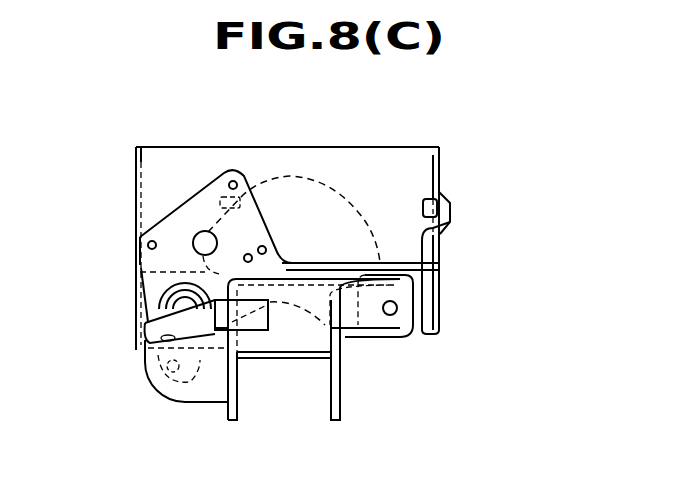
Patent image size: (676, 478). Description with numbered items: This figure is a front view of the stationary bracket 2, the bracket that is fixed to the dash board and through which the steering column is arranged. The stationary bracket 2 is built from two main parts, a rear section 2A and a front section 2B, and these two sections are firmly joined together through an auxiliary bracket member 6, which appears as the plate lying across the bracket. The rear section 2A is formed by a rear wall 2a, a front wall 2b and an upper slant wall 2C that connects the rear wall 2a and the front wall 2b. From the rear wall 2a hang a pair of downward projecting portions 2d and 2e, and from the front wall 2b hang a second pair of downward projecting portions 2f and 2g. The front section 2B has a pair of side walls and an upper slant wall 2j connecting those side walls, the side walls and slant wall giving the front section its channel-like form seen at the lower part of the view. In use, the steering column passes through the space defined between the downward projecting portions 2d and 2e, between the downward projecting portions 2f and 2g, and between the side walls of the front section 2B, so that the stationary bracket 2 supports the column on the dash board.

The stationary bracket 2 is at (272, 145).
The rear section 2A is at (376, 147).
The front section 2B is at (287, 362).
The upper slant wall 2C is at (200, 165).
The rear wall 2a is at (410, 183).
The front wall 2b is at (410, 267).
The downward projecting portion 2d is at (172, 283).
The downward projecting portion 2e is at (440, 331).
The downward projecting portion 2f is at (177, 372).
The downward projecting portion 2g is at (409, 324).
The upper slant wall 2j is at (312, 335).
The auxiliary bracket member 6 is at (172, 232).